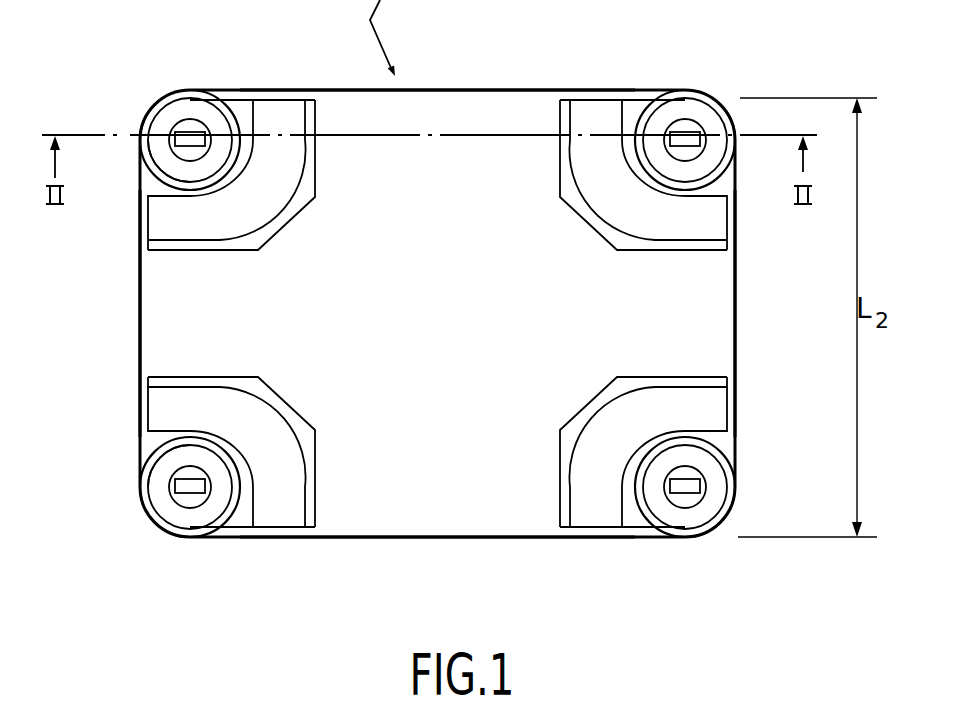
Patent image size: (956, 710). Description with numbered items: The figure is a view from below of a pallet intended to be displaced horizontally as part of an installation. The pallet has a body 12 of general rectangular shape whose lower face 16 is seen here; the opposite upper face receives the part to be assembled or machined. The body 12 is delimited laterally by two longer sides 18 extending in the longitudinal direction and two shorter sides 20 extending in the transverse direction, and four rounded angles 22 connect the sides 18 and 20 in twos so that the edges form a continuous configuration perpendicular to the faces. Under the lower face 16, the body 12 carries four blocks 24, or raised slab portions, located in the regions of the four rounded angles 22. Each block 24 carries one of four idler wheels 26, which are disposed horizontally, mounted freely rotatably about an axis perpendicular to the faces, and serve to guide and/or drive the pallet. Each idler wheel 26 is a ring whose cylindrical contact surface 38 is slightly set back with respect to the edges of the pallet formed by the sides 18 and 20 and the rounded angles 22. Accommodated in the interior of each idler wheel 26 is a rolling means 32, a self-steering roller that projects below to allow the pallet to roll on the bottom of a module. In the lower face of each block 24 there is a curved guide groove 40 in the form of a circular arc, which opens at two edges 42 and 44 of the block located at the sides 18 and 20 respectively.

The body 12 is at (487, 80).
The lower face 16 is at (455, 328).
The sides 18 is at (437, 90).
The sides 20 is at (138, 332).
The rounded angles 22 is at (150, 98).
The blocks 24 is at (297, 228).
The idler wheels 26 is at (237, 102).
The rolling means 32 is at (185, 119).
The cylindrical contact surface 38 is at (167, 178).
The curved guide groove 40 is at (210, 220).
The edge 42 is at (283, 100).
The edge 44 is at (147, 225).